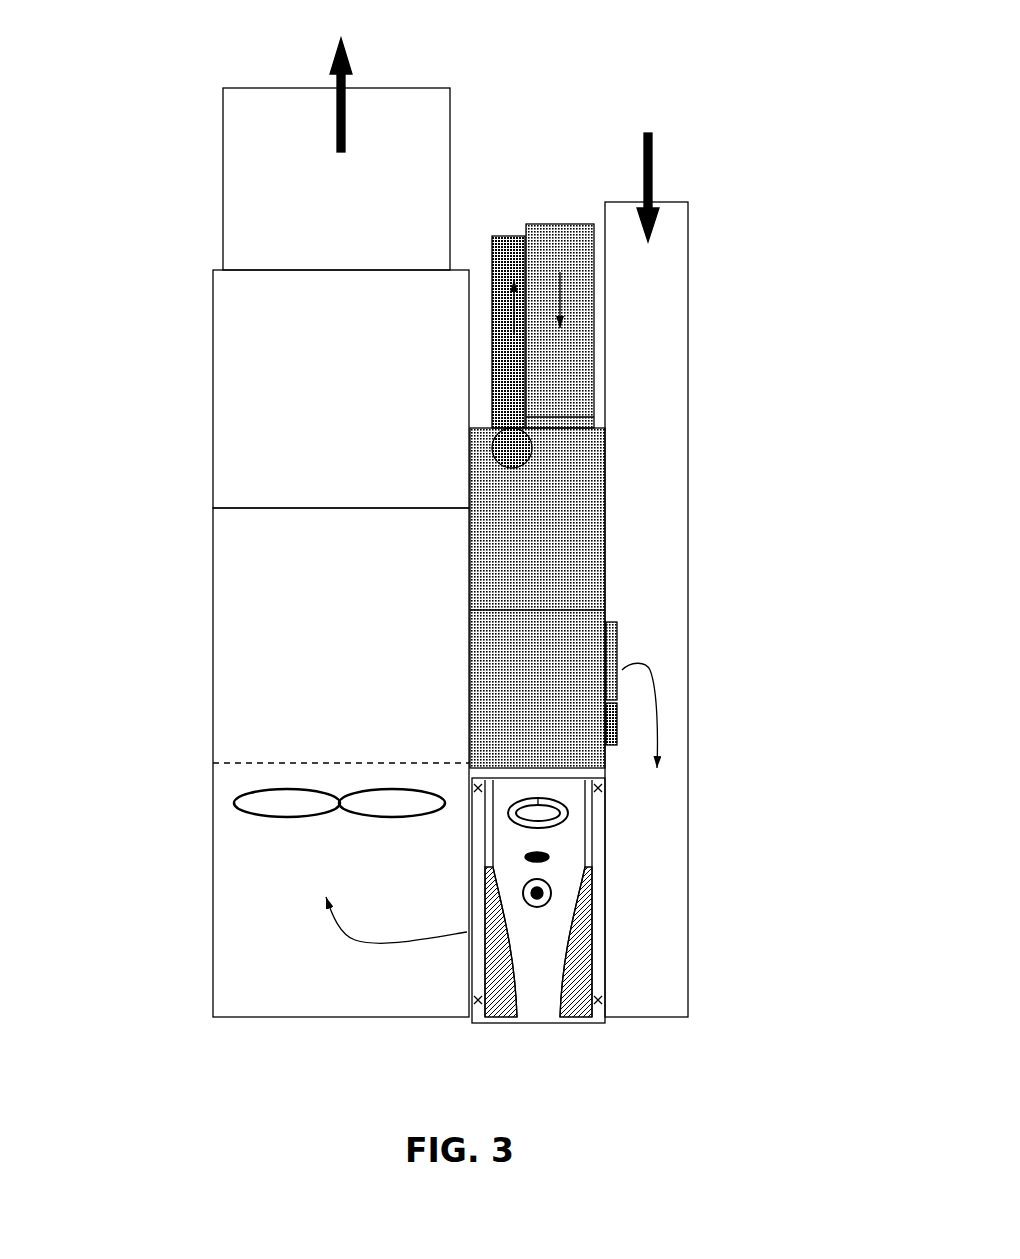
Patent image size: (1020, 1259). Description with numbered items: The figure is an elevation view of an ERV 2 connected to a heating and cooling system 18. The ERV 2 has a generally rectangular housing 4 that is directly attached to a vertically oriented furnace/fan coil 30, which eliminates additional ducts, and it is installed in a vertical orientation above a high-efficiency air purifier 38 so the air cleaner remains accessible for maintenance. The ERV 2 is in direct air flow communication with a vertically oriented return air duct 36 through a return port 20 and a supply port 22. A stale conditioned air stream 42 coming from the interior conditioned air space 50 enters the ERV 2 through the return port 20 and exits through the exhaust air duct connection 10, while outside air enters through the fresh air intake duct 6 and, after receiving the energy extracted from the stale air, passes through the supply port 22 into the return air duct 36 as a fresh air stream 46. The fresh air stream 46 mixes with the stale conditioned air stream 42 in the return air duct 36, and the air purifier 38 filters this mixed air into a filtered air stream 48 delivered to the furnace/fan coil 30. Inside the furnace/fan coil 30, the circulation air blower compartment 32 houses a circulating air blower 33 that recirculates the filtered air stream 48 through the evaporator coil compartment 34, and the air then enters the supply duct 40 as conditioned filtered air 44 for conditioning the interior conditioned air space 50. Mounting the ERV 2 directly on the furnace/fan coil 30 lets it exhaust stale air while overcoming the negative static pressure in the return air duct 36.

The interior conditioned air space 50 is at (617, 23).
The heating and cooling system 18 is at (192, 178).
The supply duct 40 is at (433, 172).
The conditioned filtered air 44 is at (338, 83).
The evaporator coil compartment 34 is at (232, 392).
The furnace/fan coil 30 is at (207, 673).
The circulation air blower compartment 32 is at (248, 900).
The circulating air blower 33 is at (237, 807).
The filtered air stream 48 is at (375, 945).
The exhaust air duct connection 10 is at (510, 247).
The fresh air intake duct 6 is at (567, 250).
The return air duct 36 is at (670, 337).
The stale conditioned air stream 42 is at (653, 172).
The fresh air stream 46 is at (657, 712).
The housing 4 is at (600, 502).
The ERV 2 is at (612, 552).
The supply port 22 is at (620, 628).
The return port 20 is at (617, 740).
The high-efficiency air purifier 38 is at (573, 995).